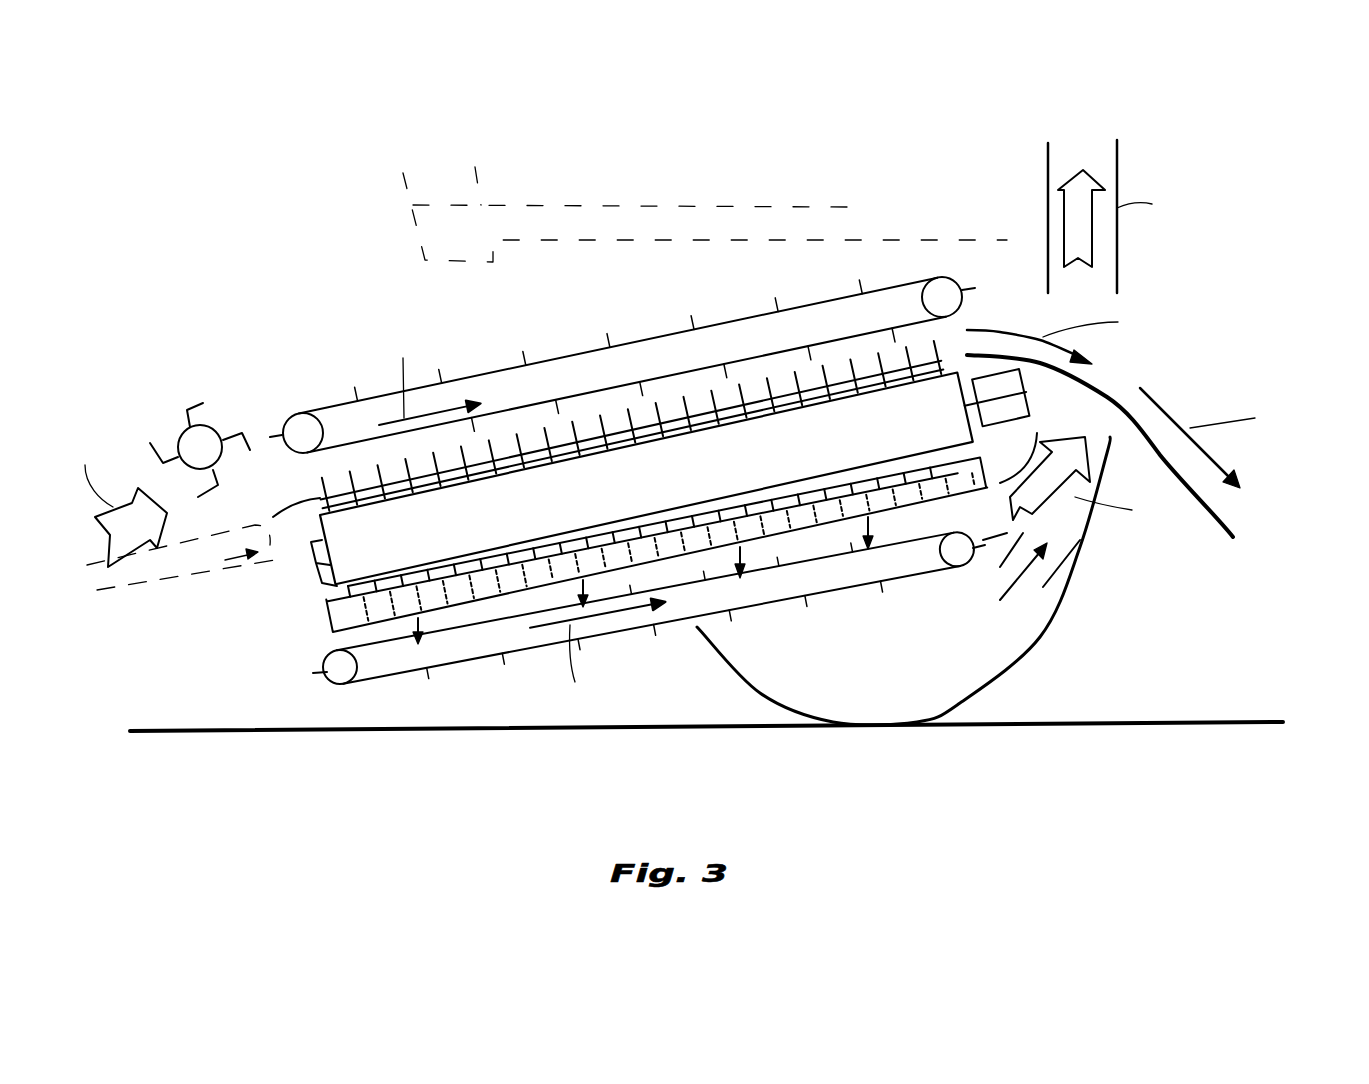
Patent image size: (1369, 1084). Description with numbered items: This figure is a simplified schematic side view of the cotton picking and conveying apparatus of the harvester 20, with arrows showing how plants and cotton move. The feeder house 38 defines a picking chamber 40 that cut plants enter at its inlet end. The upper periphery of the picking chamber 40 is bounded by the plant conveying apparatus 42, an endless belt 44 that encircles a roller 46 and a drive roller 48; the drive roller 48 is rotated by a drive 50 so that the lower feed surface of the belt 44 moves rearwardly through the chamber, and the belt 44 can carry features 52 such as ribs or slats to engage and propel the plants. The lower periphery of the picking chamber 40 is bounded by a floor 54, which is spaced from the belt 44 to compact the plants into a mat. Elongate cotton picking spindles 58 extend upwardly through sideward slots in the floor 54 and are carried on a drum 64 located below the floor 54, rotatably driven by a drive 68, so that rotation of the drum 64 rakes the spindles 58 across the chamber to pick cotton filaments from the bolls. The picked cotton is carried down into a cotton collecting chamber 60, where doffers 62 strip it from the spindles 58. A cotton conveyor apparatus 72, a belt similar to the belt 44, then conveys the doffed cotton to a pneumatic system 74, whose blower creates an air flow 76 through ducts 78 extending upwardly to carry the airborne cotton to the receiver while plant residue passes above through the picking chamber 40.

The harvester 20 is at (1301, 222).
The feeder house 38 is at (322, 308).
The picking chamber 40 is at (662, 383).
The plant conveying apparatus 42 is at (503, 368).
The endless belt 44 is at (622, 357).
The roller 46 is at (297, 425).
The drive roller 48 is at (942, 280).
The drive 50 is at (948, 297).
The features 52 is at (730, 364).
The floor 54 is at (940, 360).
The cotton picking spindles 58 is at (835, 360).
The cotton collecting chamber 60 is at (307, 527).
The doffers 62 is at (333, 632).
The drum 64 is at (407, 543).
The drive 68 is at (1033, 407).
The cotton conveyor apparatus 72 is at (650, 625).
The pneumatic system 74 is at (1060, 573).
The air flow 76 is at (1020, 587).
The ducts 78 is at (1117, 243).